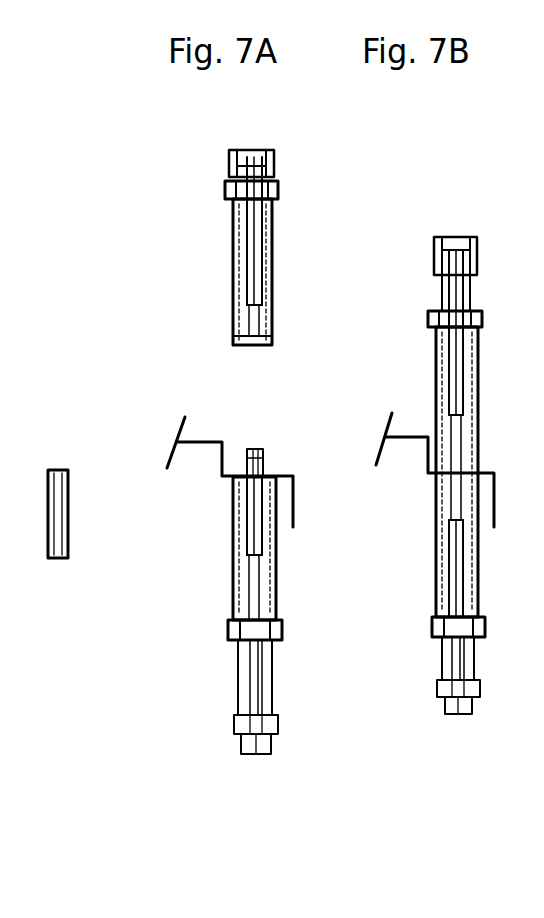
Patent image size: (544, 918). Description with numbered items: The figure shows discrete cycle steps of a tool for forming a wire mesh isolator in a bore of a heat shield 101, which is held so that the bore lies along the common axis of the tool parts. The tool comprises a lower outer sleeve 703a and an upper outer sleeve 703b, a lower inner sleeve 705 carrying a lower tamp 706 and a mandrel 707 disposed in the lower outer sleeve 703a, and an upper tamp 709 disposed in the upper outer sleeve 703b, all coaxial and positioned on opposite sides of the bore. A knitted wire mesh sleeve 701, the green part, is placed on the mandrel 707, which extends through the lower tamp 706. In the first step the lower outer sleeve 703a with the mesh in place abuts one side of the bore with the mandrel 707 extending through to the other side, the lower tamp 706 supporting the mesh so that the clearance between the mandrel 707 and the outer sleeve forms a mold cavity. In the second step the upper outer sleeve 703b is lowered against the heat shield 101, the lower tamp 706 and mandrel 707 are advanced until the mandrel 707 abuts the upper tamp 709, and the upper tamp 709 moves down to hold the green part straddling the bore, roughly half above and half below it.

In FIG. 7A, the heat shield 101 is at (203, 440).
In FIG. 7B, the heat shield 101 is at (435, 470).
In FIG. 7A, the wire mesh sleeve 701 is at (80, 514).
In FIG. 7A, the lower outer sleeve 703a is at (238, 580).
In FIG. 7B, the lower outer sleeve 703a is at (456, 443).
In FIG. 7A, the upper outer sleeve 703b is at (216, 247).
In FIG. 7A, the lower inner sleeve 705 is at (242, 656).
In FIG. 7A, the lower tamp 706 is at (272, 669).
In FIG. 7B, the lower tamp 706 is at (442, 661).
In FIG. 7B, the mandrel 707 is at (543, 784).
In FIG. 7A, the upper tamp 709 is at (323, 233).
In FIG. 7B, the upper tamp 709 is at (436, 258).